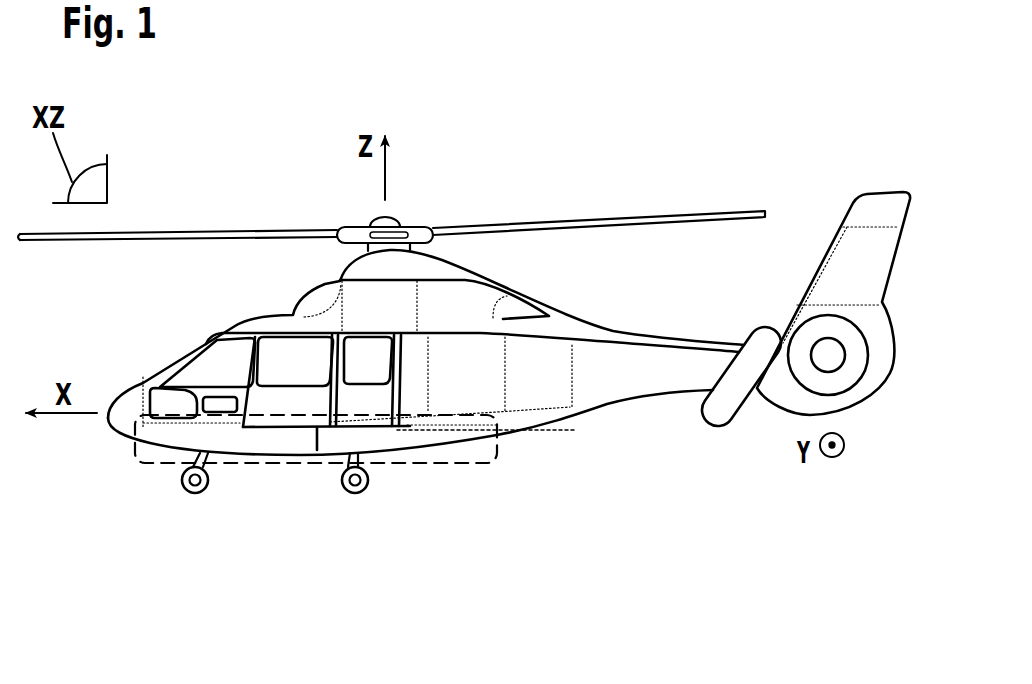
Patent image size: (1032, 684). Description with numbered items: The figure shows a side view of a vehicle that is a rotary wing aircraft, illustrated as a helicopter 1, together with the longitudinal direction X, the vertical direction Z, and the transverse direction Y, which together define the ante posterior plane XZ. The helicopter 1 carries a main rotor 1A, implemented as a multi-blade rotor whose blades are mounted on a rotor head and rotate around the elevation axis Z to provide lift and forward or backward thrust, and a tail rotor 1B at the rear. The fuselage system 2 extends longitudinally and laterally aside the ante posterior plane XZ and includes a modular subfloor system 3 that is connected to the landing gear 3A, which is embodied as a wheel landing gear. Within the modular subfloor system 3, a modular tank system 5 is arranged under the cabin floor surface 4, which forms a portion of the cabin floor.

The helicopter 1 is at (609, 165).
The main rotor 1A is at (176, 225).
The tail rotor 1B is at (862, 369).
The fuselage system 2 is at (604, 398).
The modular subfloor system 3 is at (244, 469).
The landing gear 3A is at (178, 483).
The cabin floor surface 4 is at (445, 429).
The modular tank system 5 is at (326, 437).